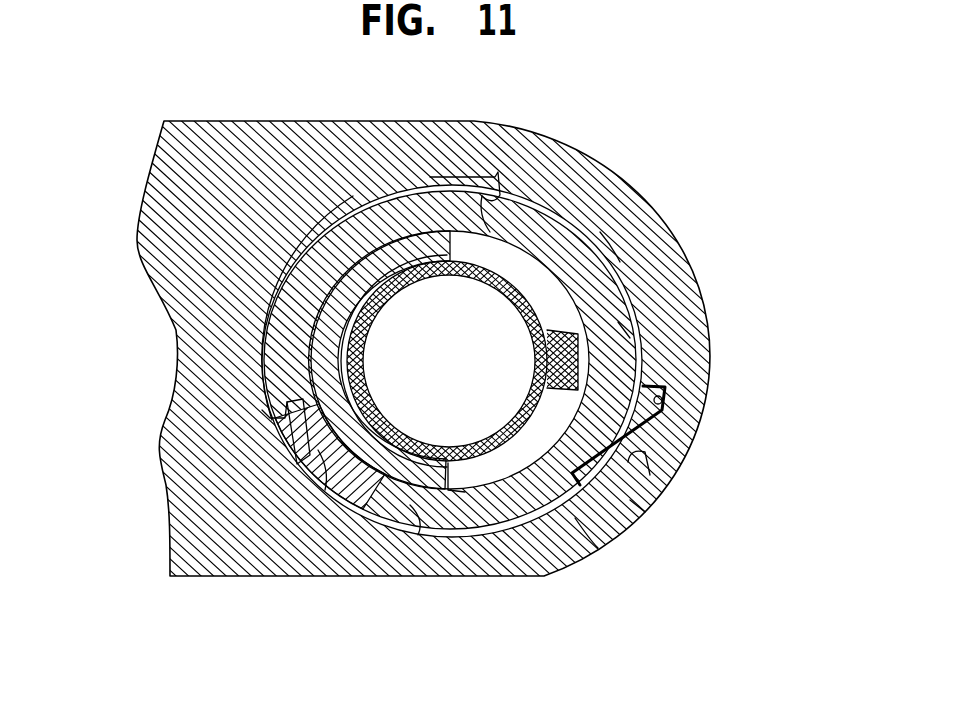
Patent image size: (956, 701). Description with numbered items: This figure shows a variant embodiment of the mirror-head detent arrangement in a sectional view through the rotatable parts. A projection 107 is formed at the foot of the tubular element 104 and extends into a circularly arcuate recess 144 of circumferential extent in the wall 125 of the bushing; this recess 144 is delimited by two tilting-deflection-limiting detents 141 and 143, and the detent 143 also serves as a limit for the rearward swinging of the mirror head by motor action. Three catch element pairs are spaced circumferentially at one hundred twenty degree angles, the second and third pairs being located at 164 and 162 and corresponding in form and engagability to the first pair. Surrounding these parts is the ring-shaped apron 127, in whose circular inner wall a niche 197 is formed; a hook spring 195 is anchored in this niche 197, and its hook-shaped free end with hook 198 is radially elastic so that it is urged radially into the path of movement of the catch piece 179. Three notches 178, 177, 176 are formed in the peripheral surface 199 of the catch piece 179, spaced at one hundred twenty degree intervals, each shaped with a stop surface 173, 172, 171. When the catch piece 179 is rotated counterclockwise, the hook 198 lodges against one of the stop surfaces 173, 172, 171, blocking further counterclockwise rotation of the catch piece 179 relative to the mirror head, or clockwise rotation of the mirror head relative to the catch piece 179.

The tubular element 104 is at (325, 407).
The projection 107 is at (585, 381).
The wall 125 is at (417, 518).
The ring-shaped apron 127 is at (665, 256).
The tilting-deflection-limiting detent 141 is at (495, 210).
The tilting-deflection-limiting detent 143 is at (440, 505).
The recess 144 is at (530, 270).
The third catch element pair 162 is at (335, 212).
The second catch element pair 164 is at (377, 528).
The stop surface 171 is at (497, 190).
The stop surface 172 is at (270, 424).
The stop surface 173 is at (598, 548).
The notch 176 is at (433, 178).
The notch 177 is at (297, 463).
The notch 178 is at (622, 432).
The catch piece 179 is at (622, 332).
The hook spring 195 is at (640, 508).
The niche 197 is at (672, 462).
The hook 198 is at (572, 512).
The peripheral surface 199 is at (605, 238).